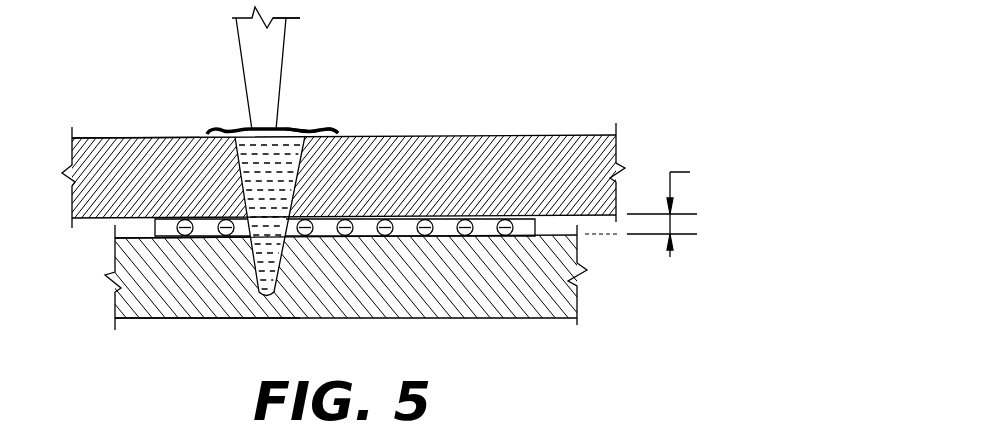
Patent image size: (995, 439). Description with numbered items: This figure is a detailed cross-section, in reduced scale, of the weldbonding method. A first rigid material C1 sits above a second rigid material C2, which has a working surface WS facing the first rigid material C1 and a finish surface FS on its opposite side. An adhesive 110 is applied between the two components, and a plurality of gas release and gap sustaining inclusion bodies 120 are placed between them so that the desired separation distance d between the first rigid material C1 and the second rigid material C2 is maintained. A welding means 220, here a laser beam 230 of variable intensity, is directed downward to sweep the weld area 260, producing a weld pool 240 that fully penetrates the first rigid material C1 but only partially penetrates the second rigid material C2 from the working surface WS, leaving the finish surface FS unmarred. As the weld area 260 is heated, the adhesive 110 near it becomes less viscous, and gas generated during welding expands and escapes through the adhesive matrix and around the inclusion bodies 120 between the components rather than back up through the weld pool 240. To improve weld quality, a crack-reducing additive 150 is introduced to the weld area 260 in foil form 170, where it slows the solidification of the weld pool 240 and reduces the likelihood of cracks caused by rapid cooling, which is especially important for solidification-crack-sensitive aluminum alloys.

The adhesive 110 is at (536, 226).
The gas release and gap sustaining inclusion bodies 120 is at (440, 220).
The crack-reducing additive 150 is at (314, 112).
The foil form 170 is at (320, 135).
The welding means 220 is at (221, 49).
The laser beam 230 is at (300, 18).
The weld pool 240 is at (235, 138).
The weld area 260 is at (408, 44).
The first rigid material C1 is at (127, 137).
The second rigid material C2 is at (226, 320).
The working surface WS is at (155, 238).
The finish surface FS is at (345, 318).
The separation distance d is at (672, 204).